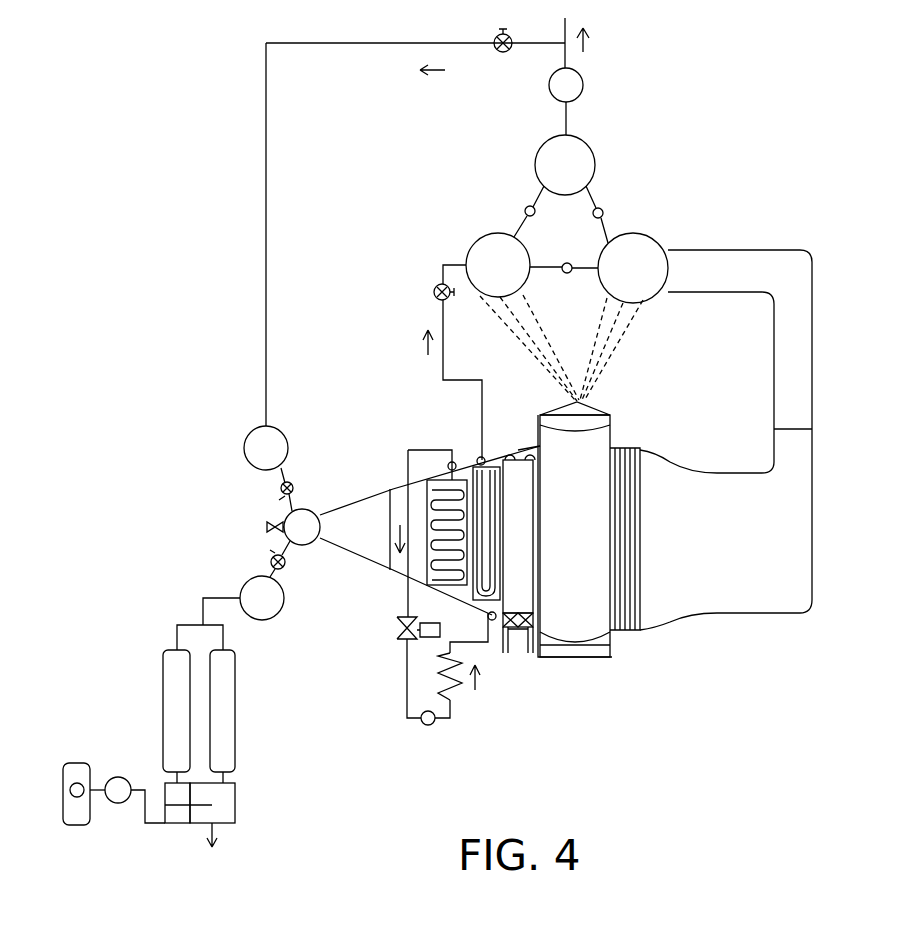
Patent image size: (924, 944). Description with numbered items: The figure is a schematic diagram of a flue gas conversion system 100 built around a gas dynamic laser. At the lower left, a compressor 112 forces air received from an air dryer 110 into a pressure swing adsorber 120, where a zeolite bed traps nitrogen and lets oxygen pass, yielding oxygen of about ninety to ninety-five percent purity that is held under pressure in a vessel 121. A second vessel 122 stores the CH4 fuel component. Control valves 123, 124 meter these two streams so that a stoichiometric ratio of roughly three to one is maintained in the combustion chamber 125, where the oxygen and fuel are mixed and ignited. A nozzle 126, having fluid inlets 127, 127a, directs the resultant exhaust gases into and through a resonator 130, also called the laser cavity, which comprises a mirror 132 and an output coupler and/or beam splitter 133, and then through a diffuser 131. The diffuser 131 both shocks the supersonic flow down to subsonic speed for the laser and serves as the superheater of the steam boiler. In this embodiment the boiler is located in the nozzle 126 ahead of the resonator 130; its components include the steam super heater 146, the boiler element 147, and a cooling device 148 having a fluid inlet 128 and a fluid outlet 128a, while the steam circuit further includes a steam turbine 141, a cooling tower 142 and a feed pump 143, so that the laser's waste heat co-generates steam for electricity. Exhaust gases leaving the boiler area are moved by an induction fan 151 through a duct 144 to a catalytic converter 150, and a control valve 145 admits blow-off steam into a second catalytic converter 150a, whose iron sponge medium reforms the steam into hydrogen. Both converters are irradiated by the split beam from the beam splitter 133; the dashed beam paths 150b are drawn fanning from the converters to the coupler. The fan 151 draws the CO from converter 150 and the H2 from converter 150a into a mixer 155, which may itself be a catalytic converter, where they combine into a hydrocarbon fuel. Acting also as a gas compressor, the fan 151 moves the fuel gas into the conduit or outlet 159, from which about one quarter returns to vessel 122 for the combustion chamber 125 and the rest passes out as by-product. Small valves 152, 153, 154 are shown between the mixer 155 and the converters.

The flue gas conversion system 100 is at (136, 99).
The air dryer 110 is at (90, 822).
The compressor 112 is at (113, 777).
The pressure swing adsorber 120 is at (163, 650).
The vessel 121 is at (268, 620).
The vessel 122 is at (243, 440).
The control valve 123 is at (270, 562).
The control valve 124 is at (280, 488).
The combustion chamber 125 is at (303, 509).
The nozzle 126 is at (370, 562).
The fluid inlet 127 is at (338, 553).
The fluid inlet 127a is at (340, 503).
The fluid inlet 128 is at (504, 655).
The fluid outlet 128a is at (533, 655).
The resonator 130 is at (584, 660).
The diffuser 131 is at (625, 633).
The mirror 132 is at (612, 638).
The output coupler and/or beam splitter 133 is at (601, 421).
The steam turbine 141 is at (397, 630).
The cooling tower 142 is at (462, 698).
The feed pump 143 is at (425, 725).
The duct 144 is at (812, 418).
The control valve 145 is at (434, 290).
The steam super heater 146 is at (408, 450).
The boiler element 147 is at (476, 465).
The cooling device 148 is at (518, 448).
The catalytic converter 150 is at (654, 302).
The catalytic converter 150a is at (480, 298).
The second light beams 150b is at (515, 335).
The induction fan 151 is at (584, 82).
The first feed valve 152 is at (524, 206).
The second feed valve 153 is at (604, 210).
The balance valve 154 is at (567, 275).
The mixer 155 is at (592, 150).
The conduit or outlet 159 is at (565, 18).